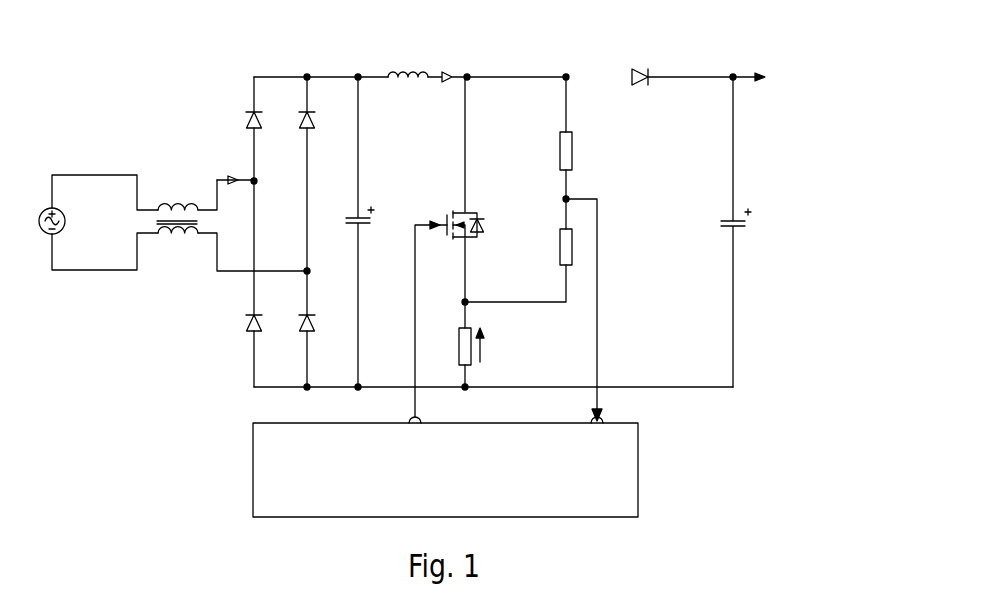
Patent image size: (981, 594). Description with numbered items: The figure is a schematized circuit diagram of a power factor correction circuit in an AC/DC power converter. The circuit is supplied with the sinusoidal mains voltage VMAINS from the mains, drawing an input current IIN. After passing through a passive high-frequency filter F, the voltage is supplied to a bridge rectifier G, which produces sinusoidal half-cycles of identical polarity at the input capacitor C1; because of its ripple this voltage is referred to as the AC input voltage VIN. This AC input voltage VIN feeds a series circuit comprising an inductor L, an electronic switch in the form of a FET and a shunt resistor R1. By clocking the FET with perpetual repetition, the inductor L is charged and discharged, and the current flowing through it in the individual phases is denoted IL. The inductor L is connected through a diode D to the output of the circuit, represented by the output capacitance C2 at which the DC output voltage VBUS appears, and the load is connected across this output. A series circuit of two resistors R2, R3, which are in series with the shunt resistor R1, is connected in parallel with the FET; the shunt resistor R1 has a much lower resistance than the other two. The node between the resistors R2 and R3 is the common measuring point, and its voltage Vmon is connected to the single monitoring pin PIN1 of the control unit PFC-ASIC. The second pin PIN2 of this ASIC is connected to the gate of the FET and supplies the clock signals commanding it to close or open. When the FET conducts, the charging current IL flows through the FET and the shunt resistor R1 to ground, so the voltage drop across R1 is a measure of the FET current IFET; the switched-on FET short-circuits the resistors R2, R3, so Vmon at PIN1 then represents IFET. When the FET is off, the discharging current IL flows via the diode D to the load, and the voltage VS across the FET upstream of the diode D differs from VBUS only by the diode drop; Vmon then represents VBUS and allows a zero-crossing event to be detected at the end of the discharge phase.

The sinusoidal mains voltage VMAINS is at (98, 222).
The passive high-frequency filter F is at (177, 200).
The input current IIN is at (233, 161).
The bridge rectifier G is at (287, 244).
The AC input voltage VIN is at (360, 80).
The input capacitor C1 is at (374, 220).
The inductor L is at (412, 72).
The inductor current IL is at (497, 61).
The switch voltage VS is at (468, 80).
The element FET is at (484, 189).
The second pin PIN2 is at (421, 420).
The shunt resistor R1 is at (451, 344).
The FET current IFET is at (499, 349).
The resistor R3 is at (552, 136).
The monitoring voltage Vmon is at (597, 195).
The resistor R2 is at (518, 250).
The single monitoring pin PIN1 is at (603, 420).
The diode D is at (682, 64).
The DC output voltage VBUS is at (732, 80).
The element load is at (772, 79).
The output capacitance C2 is at (718, 226).
The control unit PFC-ASIC is at (445, 470).